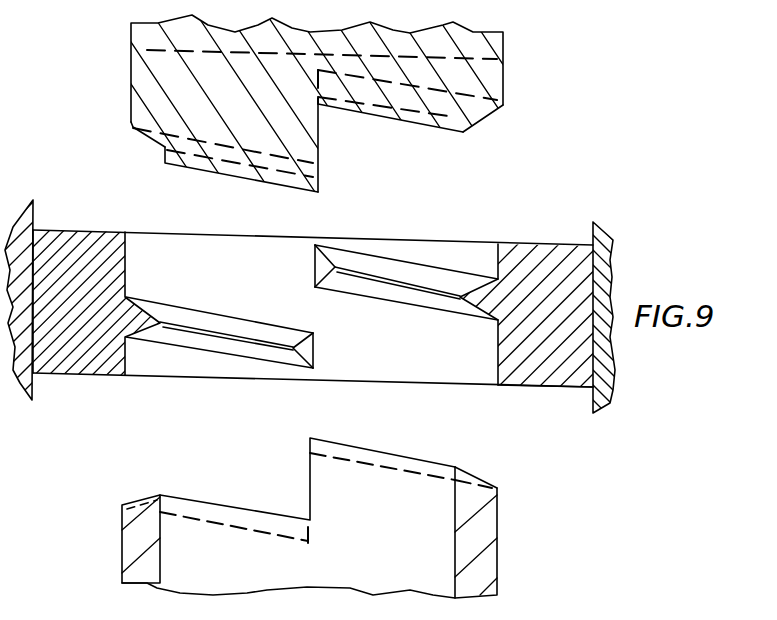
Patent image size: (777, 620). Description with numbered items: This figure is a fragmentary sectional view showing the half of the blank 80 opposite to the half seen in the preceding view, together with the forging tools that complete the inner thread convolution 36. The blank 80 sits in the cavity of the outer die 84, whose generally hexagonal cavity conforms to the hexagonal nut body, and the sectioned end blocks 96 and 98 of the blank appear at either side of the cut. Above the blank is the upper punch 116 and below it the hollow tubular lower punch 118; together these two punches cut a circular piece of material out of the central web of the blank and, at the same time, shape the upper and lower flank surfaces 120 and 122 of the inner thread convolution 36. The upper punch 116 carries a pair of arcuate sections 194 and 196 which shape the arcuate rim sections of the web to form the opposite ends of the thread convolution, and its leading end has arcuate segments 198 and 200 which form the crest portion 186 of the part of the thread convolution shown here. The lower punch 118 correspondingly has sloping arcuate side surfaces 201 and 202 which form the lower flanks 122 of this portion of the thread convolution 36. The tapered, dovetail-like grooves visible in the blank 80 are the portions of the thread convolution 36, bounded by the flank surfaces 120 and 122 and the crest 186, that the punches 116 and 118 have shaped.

The blank 80 is at (388, 281).
The inner thread convolution 36 is at (313, 224).
The outer die 84 is at (613, 383).
The right end block 96 is at (538, 245).
The bottom surface of right end block 98 is at (533, 387).
The upper punch 116 is at (352, 107).
The lower punch 118 is at (327, 518).
The upper flank surface 120 is at (312, 307).
The lower flank surface 122 is at (200, 345).
The crest surface 186 is at (250, 340).
The arcuate section 194 is at (133, 127).
The arcuate section 196 is at (500, 112).
The arcuate segment 198 is at (318, 188).
The arcuate segment 200 is at (465, 128).
The sloping arcuate side surface 201 is at (143, 497).
The sloping arcuate side surface 202 is at (468, 482).